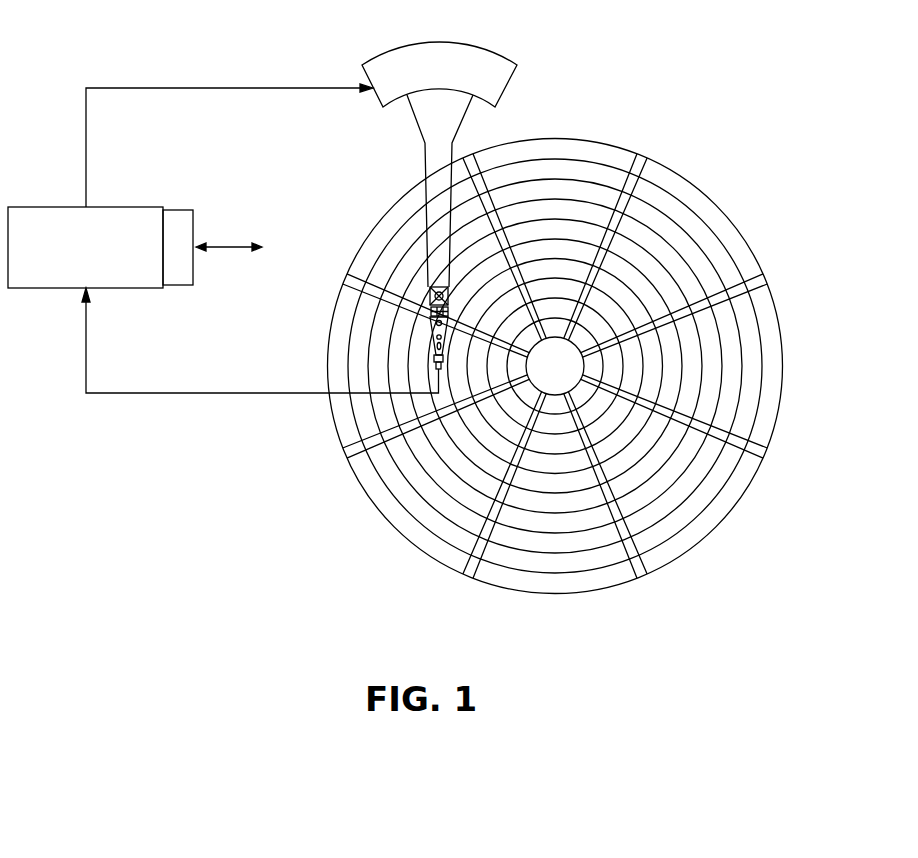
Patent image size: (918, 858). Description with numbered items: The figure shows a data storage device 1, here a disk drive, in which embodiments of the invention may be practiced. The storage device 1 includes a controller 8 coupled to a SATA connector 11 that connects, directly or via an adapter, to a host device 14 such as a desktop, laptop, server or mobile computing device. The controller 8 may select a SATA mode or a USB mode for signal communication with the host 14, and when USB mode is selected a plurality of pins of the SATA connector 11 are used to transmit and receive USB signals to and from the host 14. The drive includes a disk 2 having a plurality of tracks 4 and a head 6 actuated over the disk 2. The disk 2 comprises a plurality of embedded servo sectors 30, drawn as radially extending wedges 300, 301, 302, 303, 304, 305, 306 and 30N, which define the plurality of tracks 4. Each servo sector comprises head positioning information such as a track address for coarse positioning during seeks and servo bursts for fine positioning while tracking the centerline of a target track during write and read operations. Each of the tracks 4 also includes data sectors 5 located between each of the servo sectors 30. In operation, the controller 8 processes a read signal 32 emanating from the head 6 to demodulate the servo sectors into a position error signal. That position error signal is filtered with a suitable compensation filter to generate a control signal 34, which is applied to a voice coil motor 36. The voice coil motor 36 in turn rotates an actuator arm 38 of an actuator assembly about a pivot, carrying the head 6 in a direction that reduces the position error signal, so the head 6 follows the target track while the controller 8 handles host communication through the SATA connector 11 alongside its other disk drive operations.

The data storage device 1 is at (688, 62).
The disk 2 is at (711, 171).
The tracks 4 is at (575, 182).
The data sectors 5 is at (734, 236).
The head 6 is at (420, 350).
The controller 8 is at (112, 207).
The SATA connector 11 is at (186, 210).
The host device 14 is at (257, 261).
The servo sectors 30 is at (553, 372).
The servo sector 300 is at (641, 160).
The servo sector 301 is at (758, 287).
The servo sector 302 is at (760, 455).
The servo sector 303 is at (640, 576).
The servo sector 304 is at (467, 574).
The servo sector 305 is at (350, 451).
The servo sector 306 is at (342, 284).
The servo sector 30N is at (477, 158).
The read signal 32 is at (166, 393).
The control signal 34 is at (86, 118).
The voice coil motor 36 is at (478, 48).
The actuator arm 38 is at (425, 163).